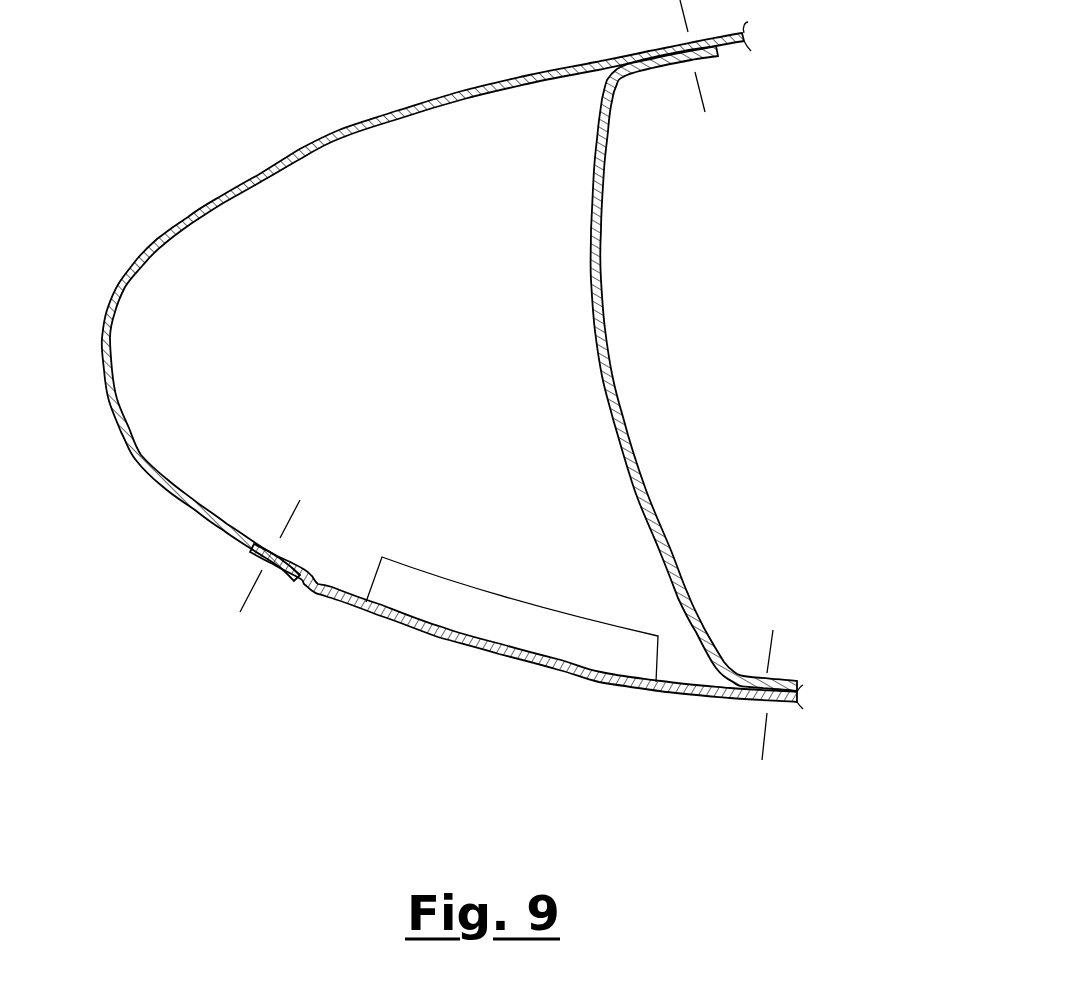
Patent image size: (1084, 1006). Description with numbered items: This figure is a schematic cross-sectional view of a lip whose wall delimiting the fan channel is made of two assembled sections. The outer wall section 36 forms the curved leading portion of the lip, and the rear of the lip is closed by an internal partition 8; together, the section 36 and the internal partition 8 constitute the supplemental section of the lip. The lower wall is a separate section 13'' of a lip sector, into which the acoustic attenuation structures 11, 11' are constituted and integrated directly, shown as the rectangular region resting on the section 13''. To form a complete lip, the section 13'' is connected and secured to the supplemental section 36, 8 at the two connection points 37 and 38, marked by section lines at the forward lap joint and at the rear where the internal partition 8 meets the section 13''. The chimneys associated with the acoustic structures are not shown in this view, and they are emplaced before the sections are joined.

The supplemental section 36 is at (210, 192).
The internal partition 8 is at (623, 418).
The acoustic attenuation structure 11 is at (509, 566).
The acoustic attenuation structure 11' is at (509, 566).
The section 13'' is at (526, 637).
The connection point 37 is at (247, 595).
The connection point 38 is at (765, 742).